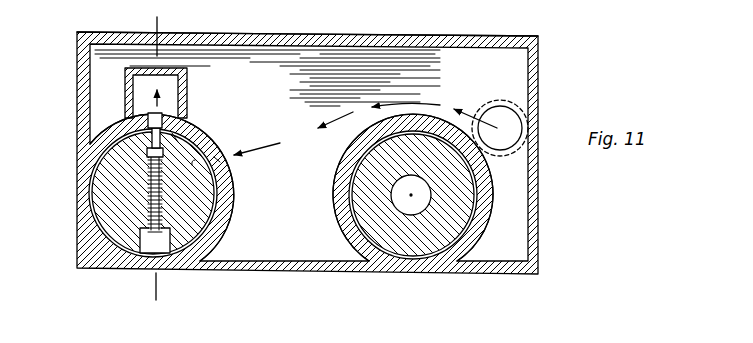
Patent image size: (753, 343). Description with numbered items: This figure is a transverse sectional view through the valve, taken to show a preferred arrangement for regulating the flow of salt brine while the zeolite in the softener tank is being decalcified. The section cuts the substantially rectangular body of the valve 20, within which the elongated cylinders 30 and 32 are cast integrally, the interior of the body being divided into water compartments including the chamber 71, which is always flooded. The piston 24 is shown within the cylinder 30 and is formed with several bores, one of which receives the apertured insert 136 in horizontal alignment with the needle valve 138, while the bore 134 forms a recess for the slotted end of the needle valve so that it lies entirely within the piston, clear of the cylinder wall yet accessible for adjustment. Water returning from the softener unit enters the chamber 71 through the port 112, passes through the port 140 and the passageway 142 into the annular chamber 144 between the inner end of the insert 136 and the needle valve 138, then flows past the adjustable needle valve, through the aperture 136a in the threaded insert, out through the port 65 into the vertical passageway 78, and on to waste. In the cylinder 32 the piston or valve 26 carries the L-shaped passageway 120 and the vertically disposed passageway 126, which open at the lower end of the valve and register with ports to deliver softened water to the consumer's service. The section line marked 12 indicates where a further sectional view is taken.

The section line 12- 12 is at (157, 17).
The body of the valve 20 is at (538, 238).
The piston 24 is at (113, 205).
The piston or valve 26 is at (455, 190).
The cylinder 30 is at (263, 221).
The cylinder 32 is at (482, 228).
The port 65 is at (148, 117).
The chamber 71 is at (470, 61).
The elongated passageway 78 is at (147, 92).
The port 112 is at (507, 117).
The L-shaped passageway 120 is at (333, 2).
The L-shaped passageway 126 is at (410, 207).
The bore 134 is at (151, 238).
The apertured insert 136 is at (142, 146).
The aperture 136a is at (178, 142).
The needle valve 138 is at (157, 178).
The port 140 is at (215, 157).
The passageway 142 is at (196, 160).
The annular chamber 144 is at (147, 153).